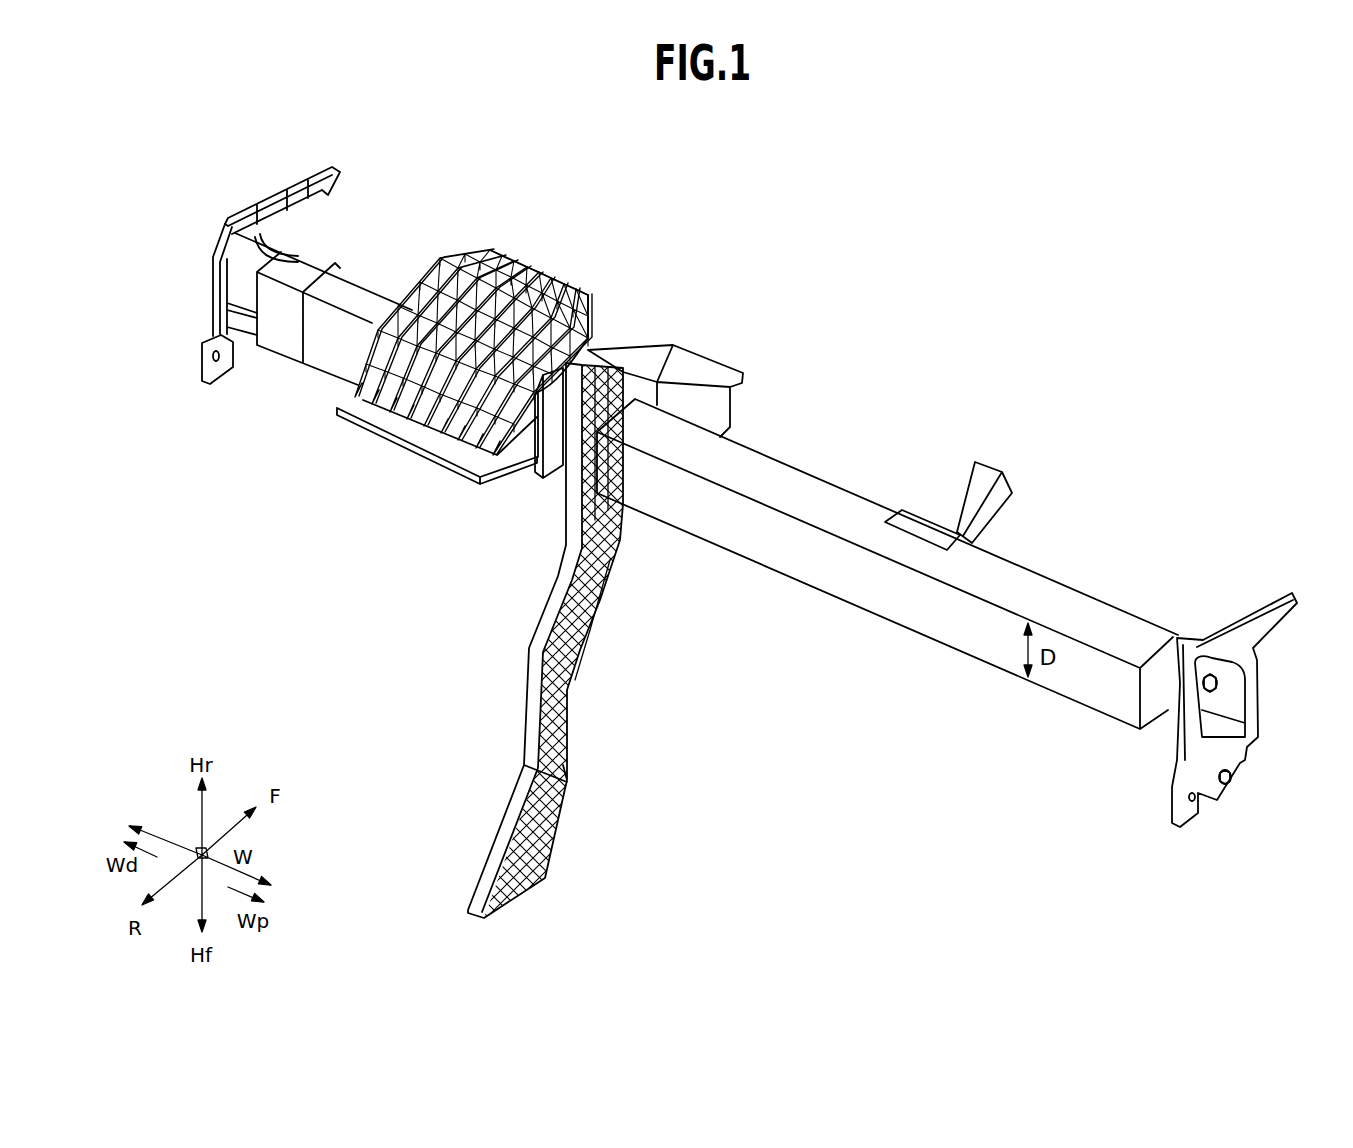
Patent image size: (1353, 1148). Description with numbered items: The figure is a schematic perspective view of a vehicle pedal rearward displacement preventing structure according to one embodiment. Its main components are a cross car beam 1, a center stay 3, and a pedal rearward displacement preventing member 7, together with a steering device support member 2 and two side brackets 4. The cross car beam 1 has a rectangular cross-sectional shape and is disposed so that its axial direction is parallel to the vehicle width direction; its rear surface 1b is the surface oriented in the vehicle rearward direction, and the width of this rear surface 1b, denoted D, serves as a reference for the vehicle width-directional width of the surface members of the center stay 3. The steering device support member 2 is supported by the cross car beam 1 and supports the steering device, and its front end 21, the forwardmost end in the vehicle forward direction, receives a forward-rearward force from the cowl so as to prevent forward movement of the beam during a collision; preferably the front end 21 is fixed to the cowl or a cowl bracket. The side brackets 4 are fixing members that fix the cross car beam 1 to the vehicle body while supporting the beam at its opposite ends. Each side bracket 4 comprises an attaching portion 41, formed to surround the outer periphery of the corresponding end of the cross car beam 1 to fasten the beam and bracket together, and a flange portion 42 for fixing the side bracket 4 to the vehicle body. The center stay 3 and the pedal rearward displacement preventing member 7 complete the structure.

The cross car beam 1 is at (790, 459).
The rear surface 1b is at (1085, 692).
The steering device support member 2 is at (470, 328).
The front end 21 is at (527, 277).
The center stay 3 is at (567, 693).
The side bracket 4 is at (737, 463).
The attaching portion 41 is at (318, 253).
The flange portion 42 is at (250, 207).
The pedal rearward displacement preventing member 7 is at (642, 347).